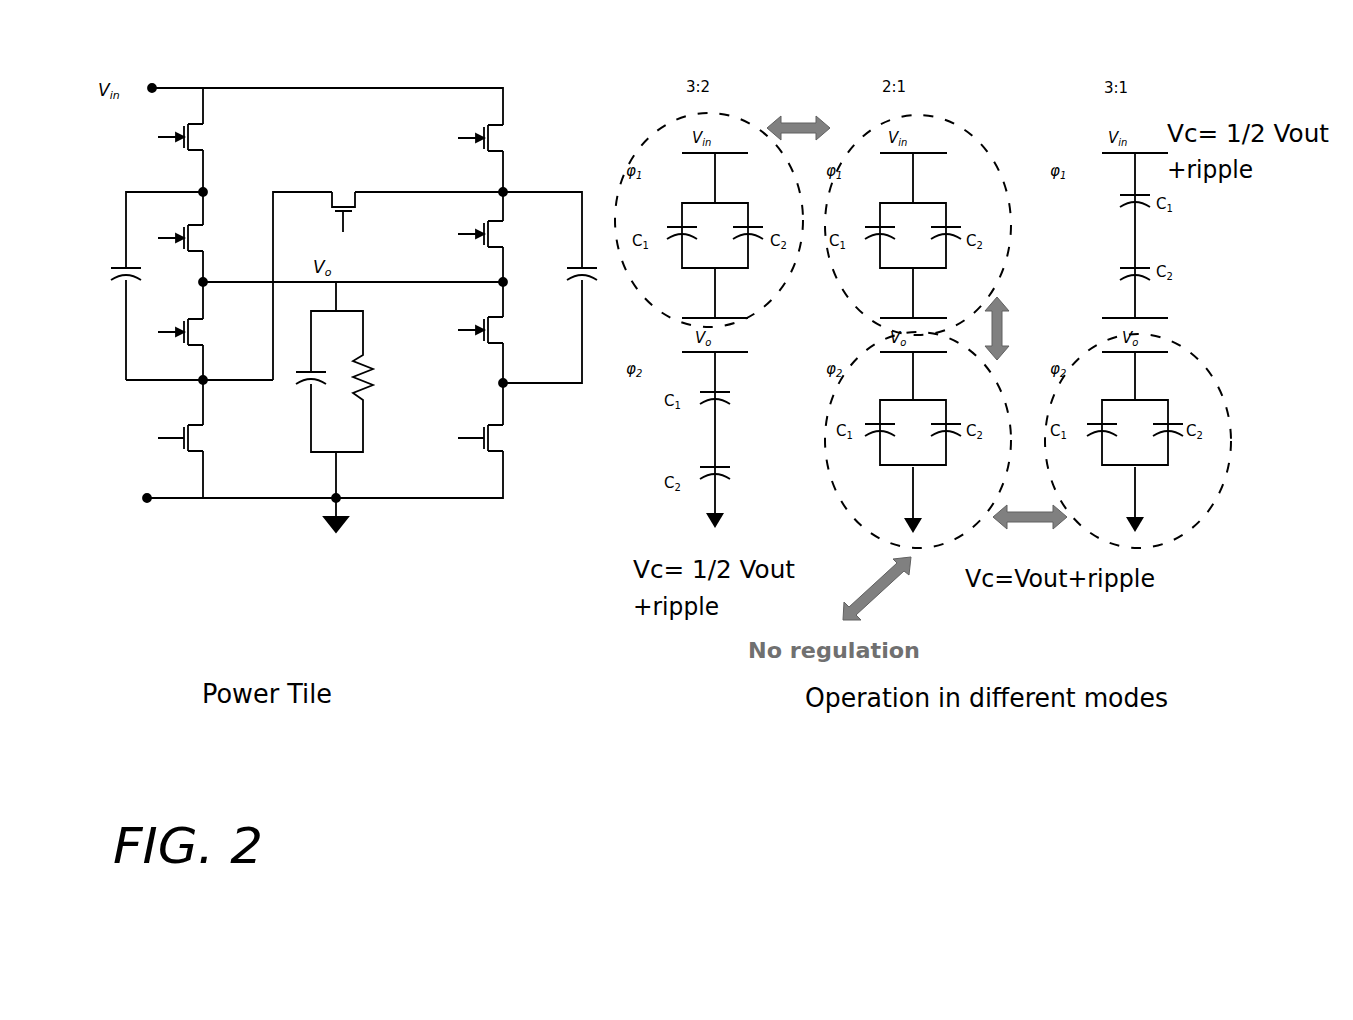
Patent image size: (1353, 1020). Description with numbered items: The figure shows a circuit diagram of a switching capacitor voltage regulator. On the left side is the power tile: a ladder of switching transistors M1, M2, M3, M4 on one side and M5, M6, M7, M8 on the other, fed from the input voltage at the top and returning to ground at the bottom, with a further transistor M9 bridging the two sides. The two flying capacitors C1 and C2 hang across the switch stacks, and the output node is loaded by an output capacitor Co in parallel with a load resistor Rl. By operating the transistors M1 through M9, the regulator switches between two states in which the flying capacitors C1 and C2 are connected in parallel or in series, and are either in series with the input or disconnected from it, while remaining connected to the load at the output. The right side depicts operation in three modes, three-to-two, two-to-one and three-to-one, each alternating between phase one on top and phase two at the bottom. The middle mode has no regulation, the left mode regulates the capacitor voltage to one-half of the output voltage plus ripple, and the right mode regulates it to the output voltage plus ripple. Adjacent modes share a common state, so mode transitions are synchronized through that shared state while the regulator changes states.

The transistor M1 is at (194, 138).
The transistor M2 is at (194, 239).
The transistor M3 is at (194, 333).
The transistor M4 is at (194, 439).
The transistor M5 is at (463, 138).
The transistor M6 is at (463, 235).
The transistor M7 is at (459, 330).
The transistor M8 is at (463, 438).
The transistor M9 is at (340, 191).
The flying capacitor C1 is at (157, 286).
The flying capacitor C2 is at (550, 287).
The output capacitor Co is at (303, 381).
The load resistor Rl is at (364, 381).